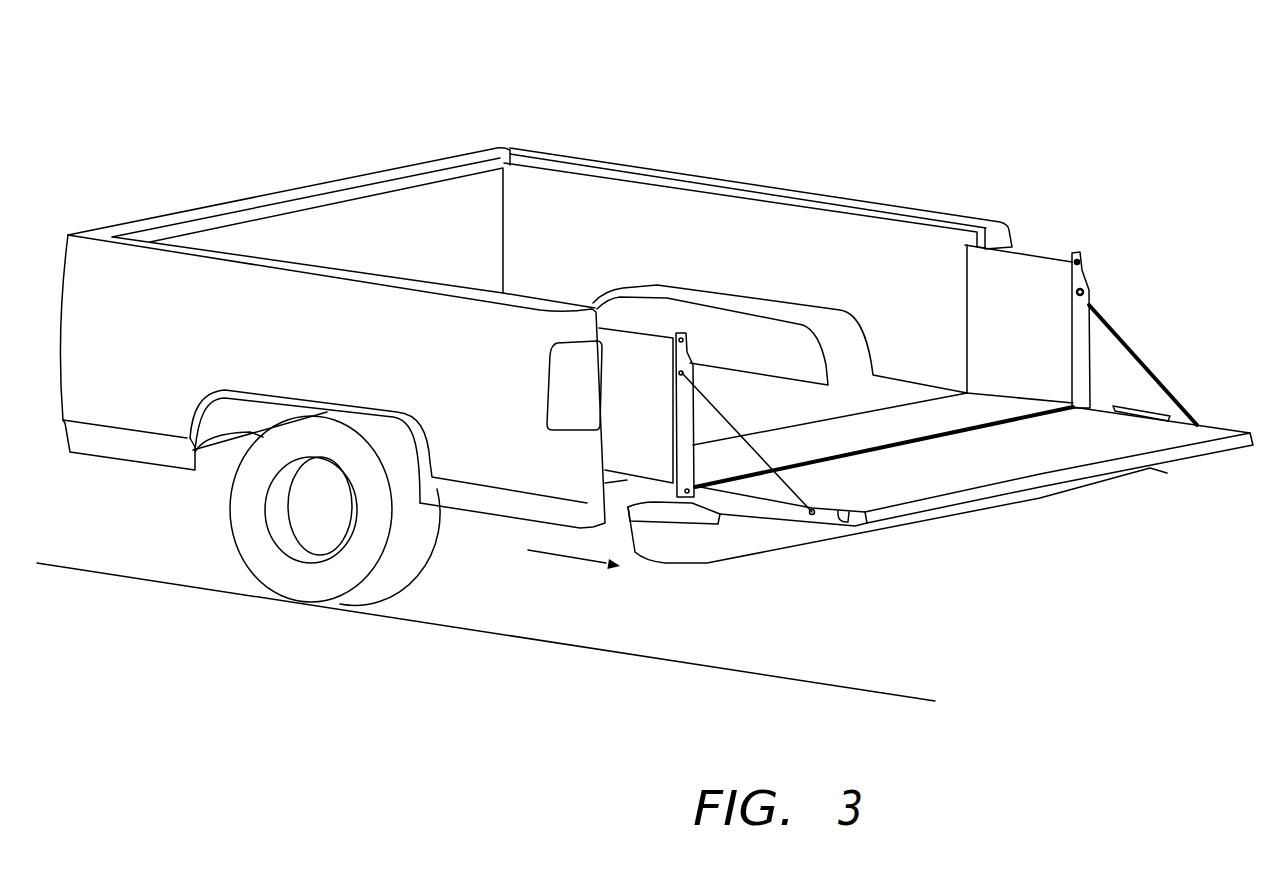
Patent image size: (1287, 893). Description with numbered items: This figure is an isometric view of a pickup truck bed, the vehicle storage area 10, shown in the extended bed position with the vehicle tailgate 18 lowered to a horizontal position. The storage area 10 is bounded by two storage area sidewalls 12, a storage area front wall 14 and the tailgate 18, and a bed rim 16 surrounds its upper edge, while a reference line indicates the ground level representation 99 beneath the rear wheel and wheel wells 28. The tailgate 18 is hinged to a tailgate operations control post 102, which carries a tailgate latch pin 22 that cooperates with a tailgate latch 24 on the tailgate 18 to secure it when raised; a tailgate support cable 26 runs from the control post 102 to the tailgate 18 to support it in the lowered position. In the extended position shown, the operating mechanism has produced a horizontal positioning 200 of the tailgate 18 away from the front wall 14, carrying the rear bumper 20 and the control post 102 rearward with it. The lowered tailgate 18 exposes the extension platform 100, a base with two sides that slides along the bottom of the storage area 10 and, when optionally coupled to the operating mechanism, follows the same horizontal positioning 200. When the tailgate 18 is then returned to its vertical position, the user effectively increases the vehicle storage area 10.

The vehicle storage area 10 is at (457, 225).
The storage area sidewalls 12 is at (200, 330).
The storage area front wall 14 is at (247, 172).
The bed rim 16 is at (723, 183).
The vehicle tailgate 18 is at (992, 467).
The rear bumper 20 is at (752, 545).
The tailgate latch pin 22 is at (1076, 260).
The tailgate latch 24 is at (843, 515).
The tailgate support cable 26 is at (1188, 410).
The wheel wells 28 is at (730, 292).
The ground level representation 99 is at (402, 620).
The extension platform 100 is at (847, 430).
The tailgate operations control post 102 is at (1080, 315).
The horizontal positioning 200 is at (575, 560).